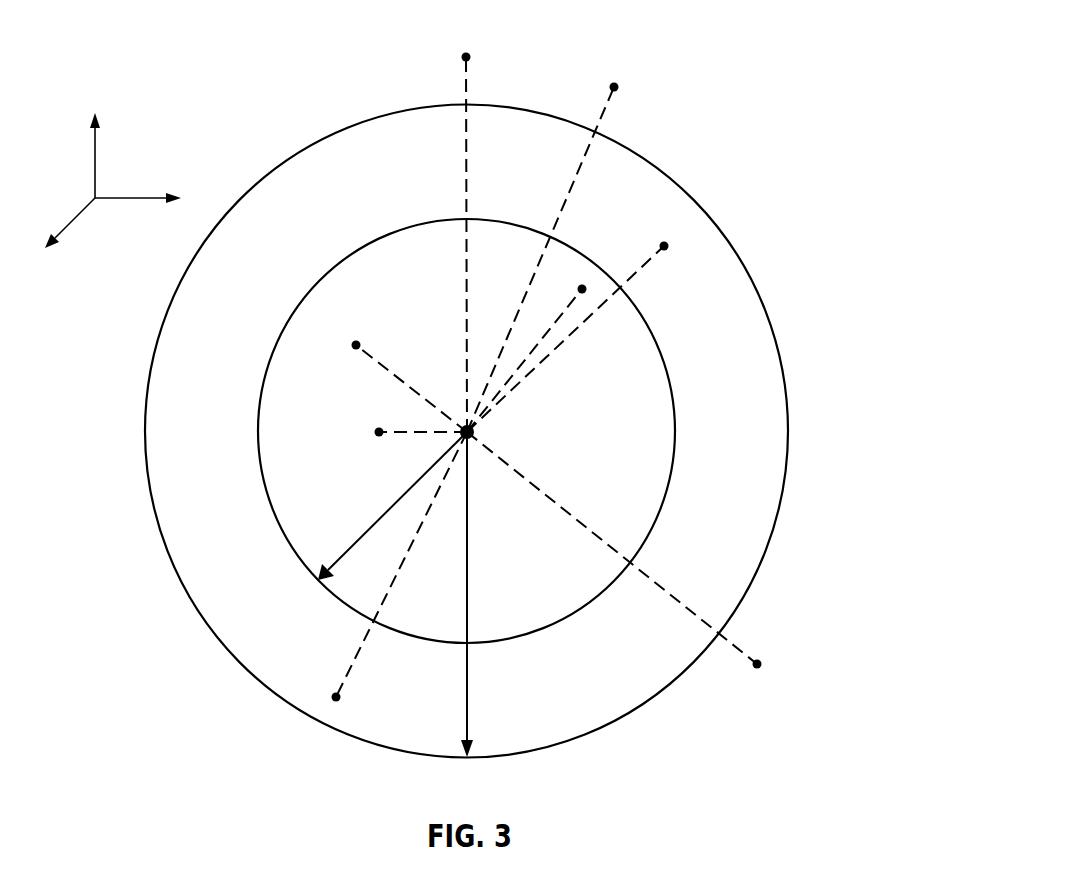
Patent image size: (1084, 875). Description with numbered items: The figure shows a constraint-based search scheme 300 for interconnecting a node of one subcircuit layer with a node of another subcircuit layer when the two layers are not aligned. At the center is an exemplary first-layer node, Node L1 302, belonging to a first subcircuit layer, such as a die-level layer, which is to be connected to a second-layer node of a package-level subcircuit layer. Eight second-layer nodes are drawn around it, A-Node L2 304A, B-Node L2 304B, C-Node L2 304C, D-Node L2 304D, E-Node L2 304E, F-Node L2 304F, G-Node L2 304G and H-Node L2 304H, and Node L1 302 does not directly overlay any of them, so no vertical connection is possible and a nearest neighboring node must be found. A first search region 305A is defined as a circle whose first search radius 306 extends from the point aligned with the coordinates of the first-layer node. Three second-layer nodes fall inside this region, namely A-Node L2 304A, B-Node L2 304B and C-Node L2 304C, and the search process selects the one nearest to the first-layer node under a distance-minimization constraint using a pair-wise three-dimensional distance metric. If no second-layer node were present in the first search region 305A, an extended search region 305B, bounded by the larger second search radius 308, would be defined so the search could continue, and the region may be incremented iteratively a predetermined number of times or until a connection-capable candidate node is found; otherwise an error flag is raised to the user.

The constraint-based search scheme 300 is at (182, 78).
The N1 node (Node L1) 302 is at (467, 432).
The A-Node L2 304A is at (379, 432).
The B-Node L2 304B is at (356, 345).
The C-Node L2 304C is at (582, 289).
The D-Node L2 304D is at (664, 246).
The E-Node L2 304E is at (336, 697).
The F-Node L2 304F is at (757, 664).
The G-Node L2 304G is at (614, 87).
The H-Node L2 304H is at (466, 57).
The first search region 305A is at (660, 348).
The extended search region 305B is at (785, 363).
The first search radius R1 306 is at (380, 515).
The second search radius R2 308 is at (467, 583).